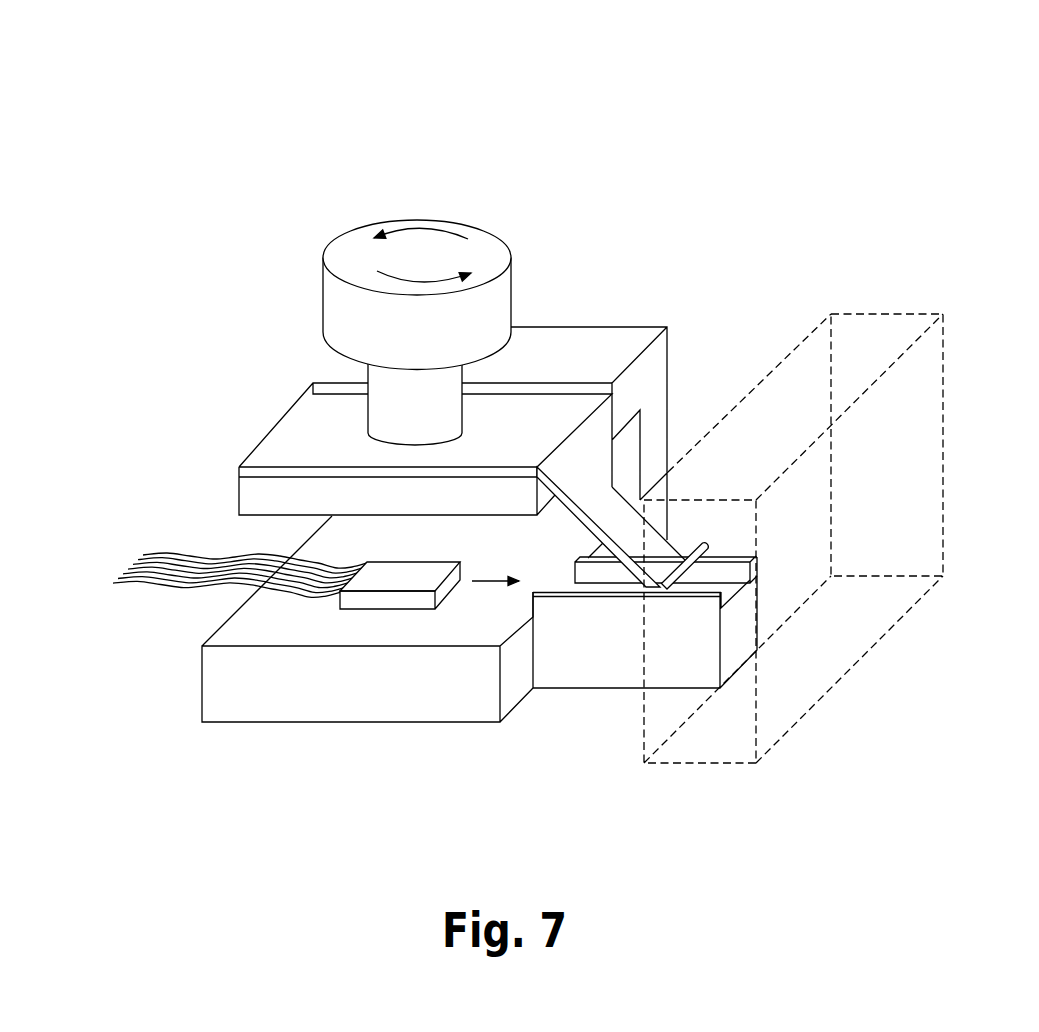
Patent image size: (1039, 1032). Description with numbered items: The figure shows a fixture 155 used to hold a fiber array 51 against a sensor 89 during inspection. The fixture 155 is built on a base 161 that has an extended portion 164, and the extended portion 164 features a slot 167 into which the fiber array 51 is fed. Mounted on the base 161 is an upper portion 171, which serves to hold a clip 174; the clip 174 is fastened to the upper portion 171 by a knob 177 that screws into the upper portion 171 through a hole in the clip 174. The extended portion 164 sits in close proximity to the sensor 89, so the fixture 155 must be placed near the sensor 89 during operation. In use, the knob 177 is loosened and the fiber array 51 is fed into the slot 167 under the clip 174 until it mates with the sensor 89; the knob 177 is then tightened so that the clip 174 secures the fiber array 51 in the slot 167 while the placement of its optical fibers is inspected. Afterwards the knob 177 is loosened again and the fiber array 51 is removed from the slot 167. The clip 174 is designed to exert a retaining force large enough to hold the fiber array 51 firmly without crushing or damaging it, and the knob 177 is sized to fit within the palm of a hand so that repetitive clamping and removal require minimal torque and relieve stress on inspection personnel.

The fixture 155 is at (700, 182).
The knob 177 is at (319, 291).
The upper portion 171 is at (646, 368).
The clip 174 is at (589, 463).
The sensor 89 is at (922, 311).
The fiber array 51 is at (393, 610).
The slot 167 is at (721, 575).
The base 161 is at (389, 722).
The extended portion 164 is at (587, 669).